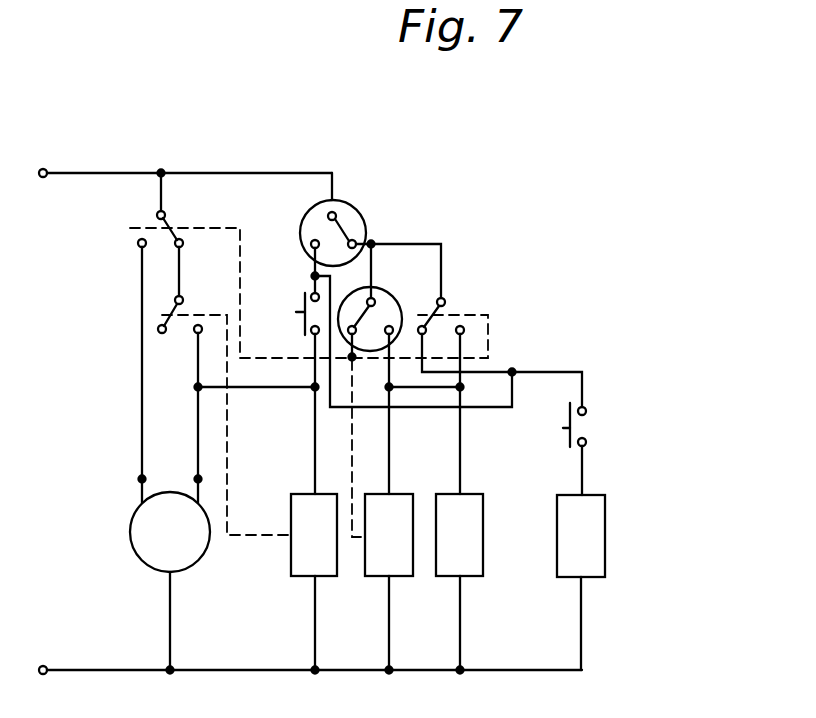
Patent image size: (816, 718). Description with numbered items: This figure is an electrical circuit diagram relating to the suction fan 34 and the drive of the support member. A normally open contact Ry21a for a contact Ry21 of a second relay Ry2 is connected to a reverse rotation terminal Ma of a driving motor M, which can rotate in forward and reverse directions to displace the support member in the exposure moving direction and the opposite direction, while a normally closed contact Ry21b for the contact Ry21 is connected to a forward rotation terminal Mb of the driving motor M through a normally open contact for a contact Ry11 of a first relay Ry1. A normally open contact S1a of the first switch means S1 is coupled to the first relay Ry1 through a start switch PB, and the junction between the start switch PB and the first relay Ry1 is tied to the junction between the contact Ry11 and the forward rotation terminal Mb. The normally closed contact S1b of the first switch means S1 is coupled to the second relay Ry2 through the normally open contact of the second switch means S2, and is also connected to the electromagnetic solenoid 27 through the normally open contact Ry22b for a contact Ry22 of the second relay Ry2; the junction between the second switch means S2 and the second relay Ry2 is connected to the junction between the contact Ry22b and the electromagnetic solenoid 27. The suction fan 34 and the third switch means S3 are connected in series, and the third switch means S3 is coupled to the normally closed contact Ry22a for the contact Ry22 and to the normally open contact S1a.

The contact of second relay Ry21 is at (158, 212).
The normally open contact Ry21a is at (138, 246).
The normally closed contact Ry21b is at (181, 240).
The contact of first relay Ry11 is at (176, 303).
The first switch means S1 is at (340, 222).
The normally open contact of first switch means S1a is at (311, 247).
The normally closed contact of first switch means S1b is at (355, 240).
The second switch means S2 is at (378, 312).
The start switch PB is at (305, 324).
The contact of second relay Ry22 is at (436, 312).
The normally closed contact Ry22a is at (430, 327).
The normally open contact Ry22b is at (466, 330).
The third switch means S3 is at (570, 440).
The driving motor M is at (148, 542).
The reverse rotation terminal Ma is at (138, 479).
The forward rotation terminal Mb is at (194, 479).
The first relay Ry1 is at (303, 565).
The second relay Ry2 is at (377, 567).
The electromagnetic solenoid 27 is at (450, 567).
The suction fan 34 is at (570, 568).